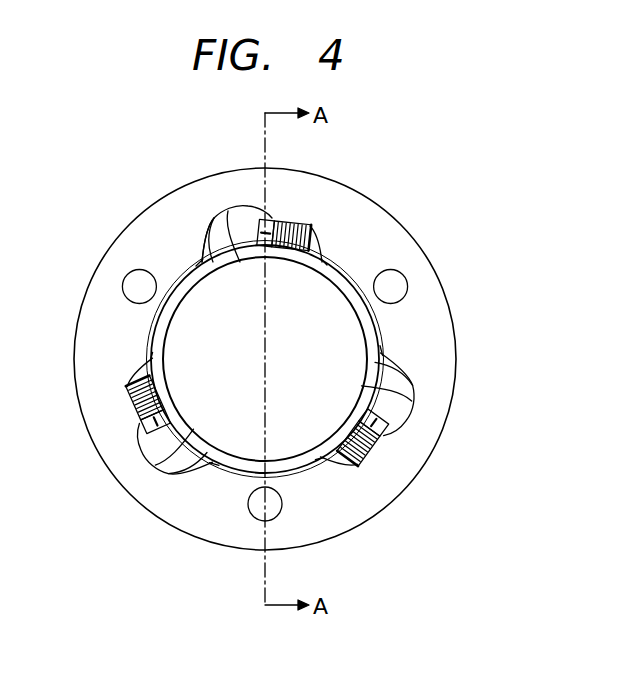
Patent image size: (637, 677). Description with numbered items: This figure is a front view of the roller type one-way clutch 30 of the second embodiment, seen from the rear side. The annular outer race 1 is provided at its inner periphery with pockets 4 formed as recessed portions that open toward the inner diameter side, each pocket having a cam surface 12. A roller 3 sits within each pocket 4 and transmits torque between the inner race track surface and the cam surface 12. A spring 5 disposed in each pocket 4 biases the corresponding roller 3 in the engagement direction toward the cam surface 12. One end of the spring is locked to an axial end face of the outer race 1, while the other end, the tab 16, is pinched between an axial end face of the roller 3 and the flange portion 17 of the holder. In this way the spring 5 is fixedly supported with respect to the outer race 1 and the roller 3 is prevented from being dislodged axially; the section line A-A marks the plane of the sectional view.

The outer race 1 is at (437, 296).
The roller 3 is at (242, 242).
The pocket 4 is at (225, 222).
The spring 5 is at (300, 210).
The cam surface 12 is at (208, 225).
The tab 16 is at (272, 250).
The flange portion 17 is at (215, 462).
The roller type one-way clutch 30 is at (425, 204).